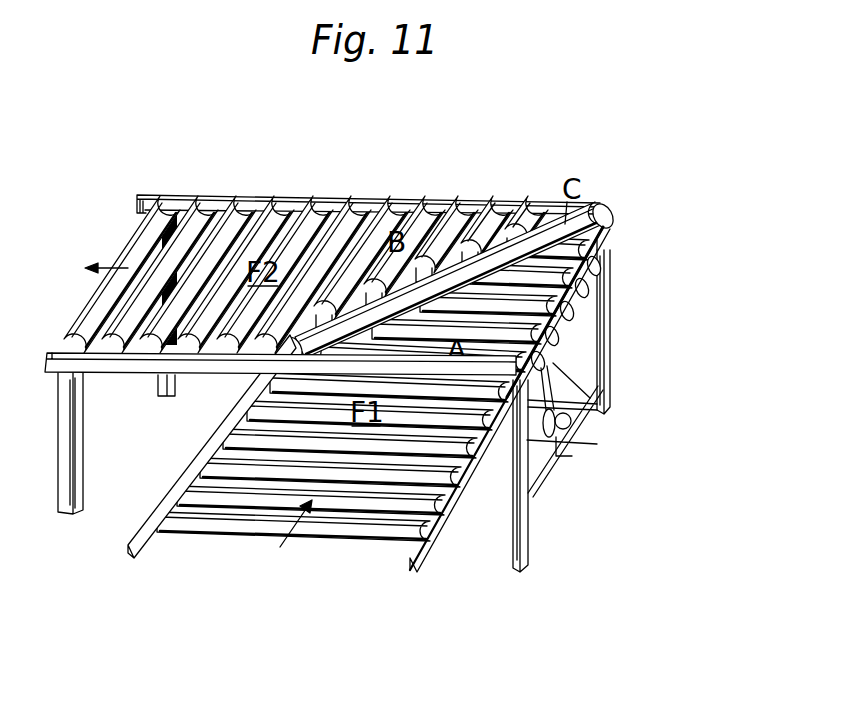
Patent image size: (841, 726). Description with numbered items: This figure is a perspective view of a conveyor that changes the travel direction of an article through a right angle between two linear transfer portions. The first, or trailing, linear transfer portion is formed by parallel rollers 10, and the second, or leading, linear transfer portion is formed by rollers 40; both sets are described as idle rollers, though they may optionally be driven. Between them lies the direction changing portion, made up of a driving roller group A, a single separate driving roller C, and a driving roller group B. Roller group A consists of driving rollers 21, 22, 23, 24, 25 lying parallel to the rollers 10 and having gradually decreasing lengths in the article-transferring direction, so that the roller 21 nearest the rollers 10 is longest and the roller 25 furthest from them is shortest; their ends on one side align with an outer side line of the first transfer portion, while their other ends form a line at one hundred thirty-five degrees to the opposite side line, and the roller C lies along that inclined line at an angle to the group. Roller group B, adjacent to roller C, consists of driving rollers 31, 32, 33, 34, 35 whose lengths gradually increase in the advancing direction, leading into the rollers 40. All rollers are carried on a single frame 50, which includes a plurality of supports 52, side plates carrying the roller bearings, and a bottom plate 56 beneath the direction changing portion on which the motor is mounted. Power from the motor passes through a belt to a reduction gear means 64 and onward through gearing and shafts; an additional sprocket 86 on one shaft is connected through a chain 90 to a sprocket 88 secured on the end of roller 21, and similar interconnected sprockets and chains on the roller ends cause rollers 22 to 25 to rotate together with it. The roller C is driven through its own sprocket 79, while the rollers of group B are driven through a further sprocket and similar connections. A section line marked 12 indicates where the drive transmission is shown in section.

The rollers 10 is at (208, 437).
The section line 12- 12 is at (614, 250).
The driving roller 21 is at (543, 360).
The driving roller 22 is at (558, 336).
The driving roller 23 is at (573, 312).
The driving roller 24 is at (588, 289).
The driving roller 25 is at (600, 266).
The driving roller 31 is at (543, 212).
The driving roller 32 is at (504, 212).
The driving roller 33 is at (469, 208).
The driving roller 34 is at (427, 206).
The driving roller 35 is at (406, 206).
The rollers 40 is at (242, 362).
The frame 50 is at (620, 249).
The supports 52 is at (78, 456).
The bottom plate 56 is at (562, 367).
The reduction gear means 64 is at (536, 488).
The sprocket 79 is at (615, 214).
The sprocket 86 is at (560, 458).
The sprocket 88 is at (560, 419).
The chain 90 is at (569, 432).